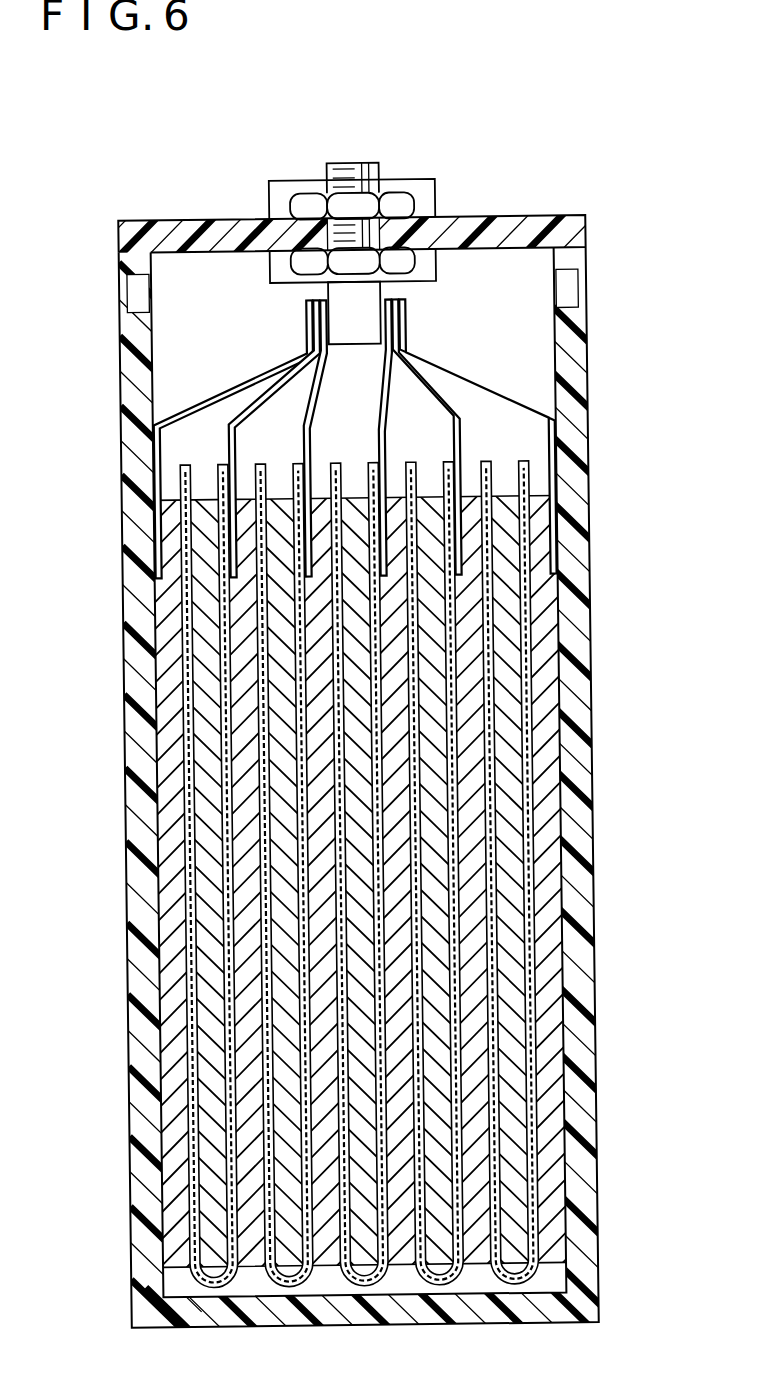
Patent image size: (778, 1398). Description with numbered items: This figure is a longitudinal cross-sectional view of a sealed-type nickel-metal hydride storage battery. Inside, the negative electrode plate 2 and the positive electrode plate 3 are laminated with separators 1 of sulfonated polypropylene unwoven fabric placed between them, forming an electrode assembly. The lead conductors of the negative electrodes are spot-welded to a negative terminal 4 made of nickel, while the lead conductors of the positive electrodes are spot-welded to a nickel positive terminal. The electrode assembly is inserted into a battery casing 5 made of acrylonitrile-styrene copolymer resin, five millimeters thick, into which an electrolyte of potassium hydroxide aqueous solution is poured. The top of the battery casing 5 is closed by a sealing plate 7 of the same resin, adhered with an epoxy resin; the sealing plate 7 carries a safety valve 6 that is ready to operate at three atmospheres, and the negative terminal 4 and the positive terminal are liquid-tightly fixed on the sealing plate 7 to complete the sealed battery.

The separator 1 is at (533, 840).
The negative electrode plate 2 is at (552, 770).
The positive electrode plate 3 is at (508, 712).
The negative terminal 4 is at (395, 290).
The battery casing 5 is at (575, 905).
The safety valve 6 is at (422, 186).
The sealing plate 7 is at (511, 223).